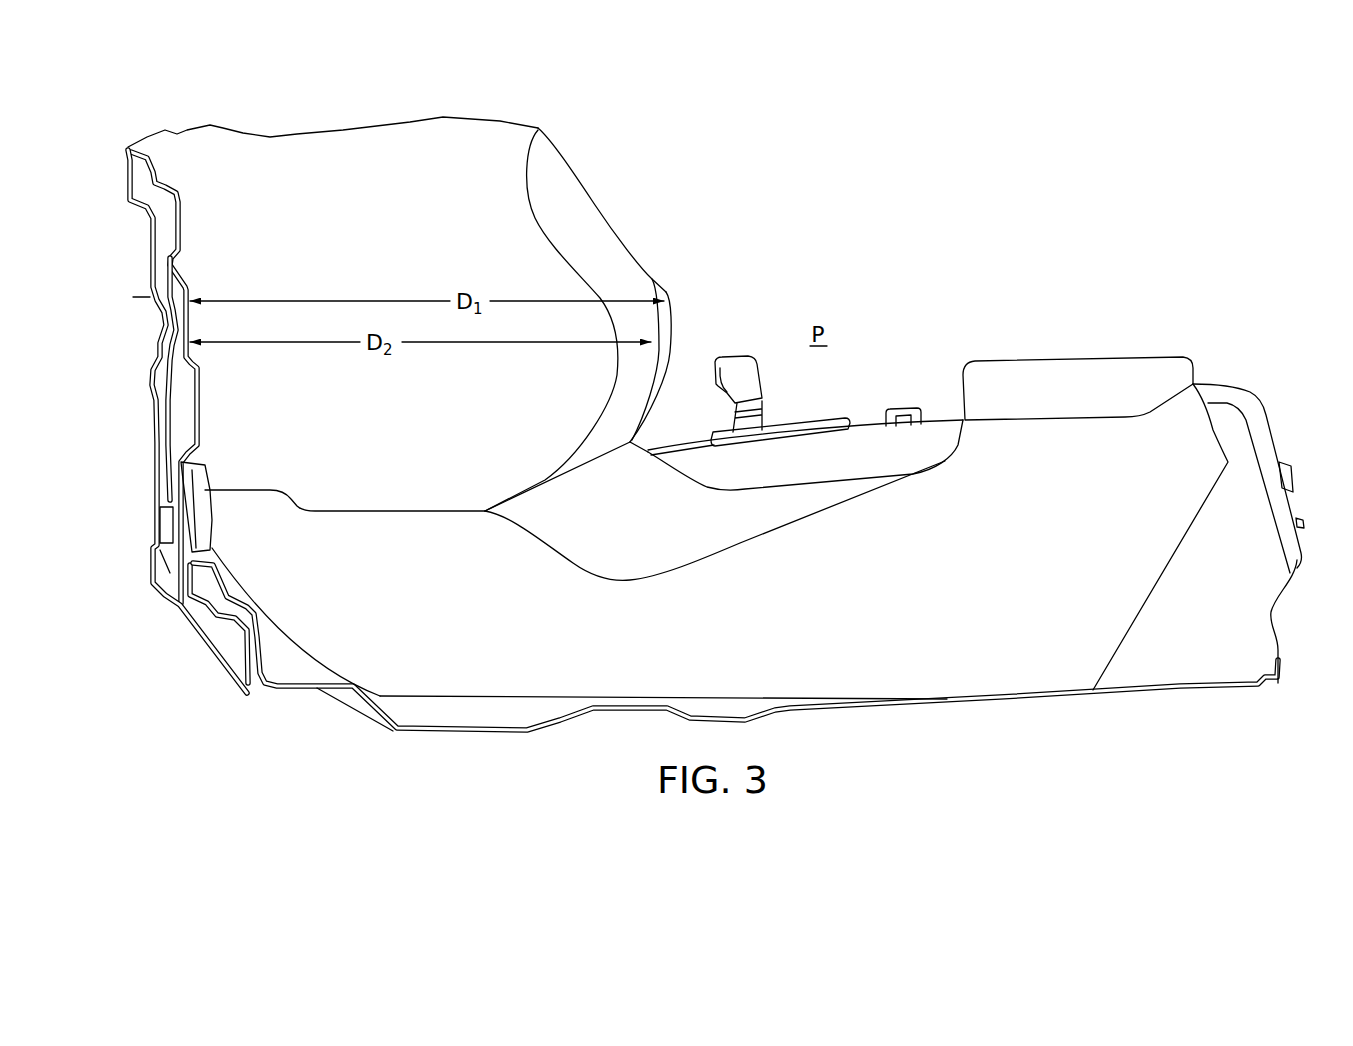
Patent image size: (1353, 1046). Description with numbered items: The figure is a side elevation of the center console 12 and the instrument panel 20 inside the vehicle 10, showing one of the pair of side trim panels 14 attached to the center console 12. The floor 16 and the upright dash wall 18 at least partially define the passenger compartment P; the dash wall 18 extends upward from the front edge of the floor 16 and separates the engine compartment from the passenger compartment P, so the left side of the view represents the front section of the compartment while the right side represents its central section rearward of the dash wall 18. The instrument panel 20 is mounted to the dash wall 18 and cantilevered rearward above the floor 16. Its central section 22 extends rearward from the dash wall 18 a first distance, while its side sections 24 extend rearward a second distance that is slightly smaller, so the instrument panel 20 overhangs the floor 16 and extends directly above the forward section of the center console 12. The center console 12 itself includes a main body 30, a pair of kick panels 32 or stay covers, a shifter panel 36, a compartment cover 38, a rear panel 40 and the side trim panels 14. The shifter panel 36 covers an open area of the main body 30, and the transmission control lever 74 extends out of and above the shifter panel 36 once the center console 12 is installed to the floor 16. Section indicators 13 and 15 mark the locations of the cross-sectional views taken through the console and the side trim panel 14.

The vehicle 10 is at (1012, 270).
The center console 12 is at (858, 416).
The section line 13 is at (683, 435).
The side trim panels 14 is at (778, 503).
The console side panel 15 is at (646, 430).
The floor 16 is at (1211, 686).
The dash wall 18 is at (210, 530).
The instrument panel 20 is at (599, 194).
The central section 22 is at (673, 326).
The side sections 24 is at (622, 366).
The main body 30 is at (952, 665).
The kick panels 32 is at (513, 655).
The shifter panel 36 is at (873, 440).
The compartment cover 38 is at (1072, 392).
The rear panel 40 is at (1234, 394).
The transmission control lever 74 is at (740, 372).